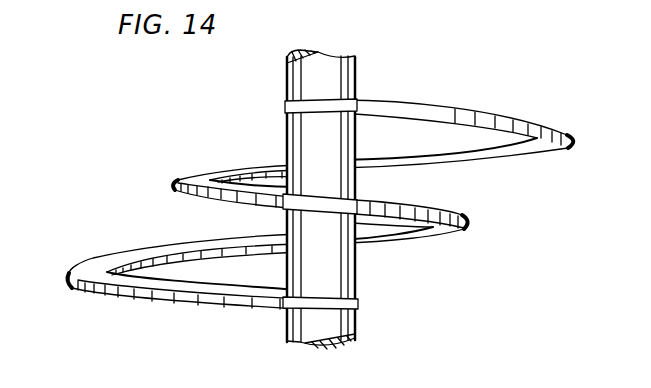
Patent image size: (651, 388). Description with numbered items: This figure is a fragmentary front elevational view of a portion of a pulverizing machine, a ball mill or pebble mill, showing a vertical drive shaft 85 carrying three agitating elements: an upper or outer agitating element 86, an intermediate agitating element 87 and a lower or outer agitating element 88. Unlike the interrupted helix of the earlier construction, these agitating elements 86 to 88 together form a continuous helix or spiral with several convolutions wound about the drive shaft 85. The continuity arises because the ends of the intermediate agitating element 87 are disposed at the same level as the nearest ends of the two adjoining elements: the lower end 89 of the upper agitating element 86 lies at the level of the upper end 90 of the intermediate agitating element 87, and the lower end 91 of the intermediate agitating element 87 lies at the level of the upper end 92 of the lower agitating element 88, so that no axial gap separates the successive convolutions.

The vertical drive shaft 85 is at (352, 80).
The upper agitating element 86 is at (563, 157).
The intermediate agitating element 87 is at (471, 232).
The lower agitating element 88 is at (358, 302).
The lower end of upper agitating element 89 is at (360, 163).
The upper end of intermediate agitating element 90 is at (281, 167).
The lower end of intermediate agitating element 91 is at (362, 234).
The upper end of lower agitating element 92 is at (278, 238).